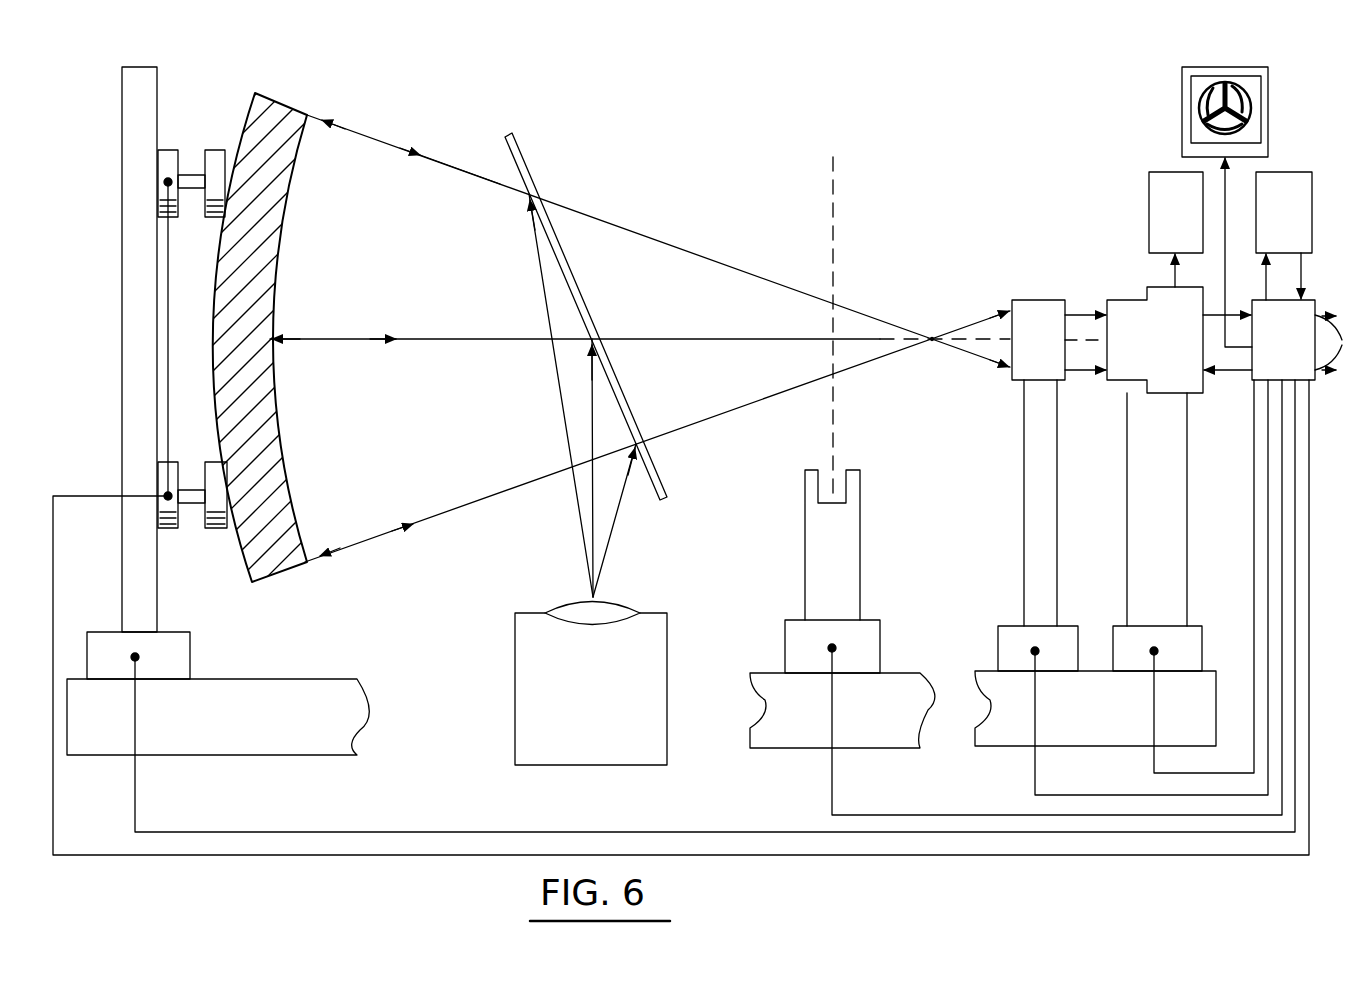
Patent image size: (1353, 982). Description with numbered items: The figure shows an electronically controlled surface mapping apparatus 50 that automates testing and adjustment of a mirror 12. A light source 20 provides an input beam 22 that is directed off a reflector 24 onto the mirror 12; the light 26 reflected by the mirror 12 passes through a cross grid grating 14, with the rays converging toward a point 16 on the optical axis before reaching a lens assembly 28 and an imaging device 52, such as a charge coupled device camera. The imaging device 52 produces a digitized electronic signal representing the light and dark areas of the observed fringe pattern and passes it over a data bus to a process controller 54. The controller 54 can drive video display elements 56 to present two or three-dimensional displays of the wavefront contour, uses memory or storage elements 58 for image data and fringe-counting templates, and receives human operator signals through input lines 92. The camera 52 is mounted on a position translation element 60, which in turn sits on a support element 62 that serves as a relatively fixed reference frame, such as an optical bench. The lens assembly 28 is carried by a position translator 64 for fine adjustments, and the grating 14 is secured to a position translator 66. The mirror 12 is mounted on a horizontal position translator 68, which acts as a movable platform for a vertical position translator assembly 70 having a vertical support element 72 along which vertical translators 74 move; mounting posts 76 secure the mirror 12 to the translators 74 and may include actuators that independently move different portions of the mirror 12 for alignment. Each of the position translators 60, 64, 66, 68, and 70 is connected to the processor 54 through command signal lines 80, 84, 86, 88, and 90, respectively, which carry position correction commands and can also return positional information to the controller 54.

The mirror 12 is at (272, 130).
The cross grid grating 14 is at (833, 192).
The focal point 16 is at (848, 339).
The light source 20 is at (576, 692).
The input beam 22 is at (322, 118).
The reflector 24 is at (560, 250).
The light 26 is at (428, 152).
The lens assembly 28 is at (1024, 354).
The surface mapping apparatus 50 is at (921, 215).
The imaging device 52 is at (1143, 354).
The process controller 54 is at (1269, 354).
The video display elements 56 is at (1162, 227).
The memory or storage elements 58 is at (1270, 227).
The position translation element 60 is at (1183, 648).
The support element 62 is at (232, 732).
The position translator 64 is at (1000, 652).
The position translator 66 is at (800, 643).
The horizontal position translator 68 is at (170, 632).
The vertical position translator assembly 70 is at (100, 228).
The vertical support element 72 is at (142, 332).
The vertical translators 74 is at (167, 150).
The mounting posts 76 is at (196, 189).
The command signal line 80 is at (1153, 768).
The command signal line 84 is at (1034, 785).
The command signal line 86 is at (830, 795).
The command signal line 88 is at (420, 832).
The command signal line 90 is at (380, 862).
The input lines 92 is at (1328, 342).